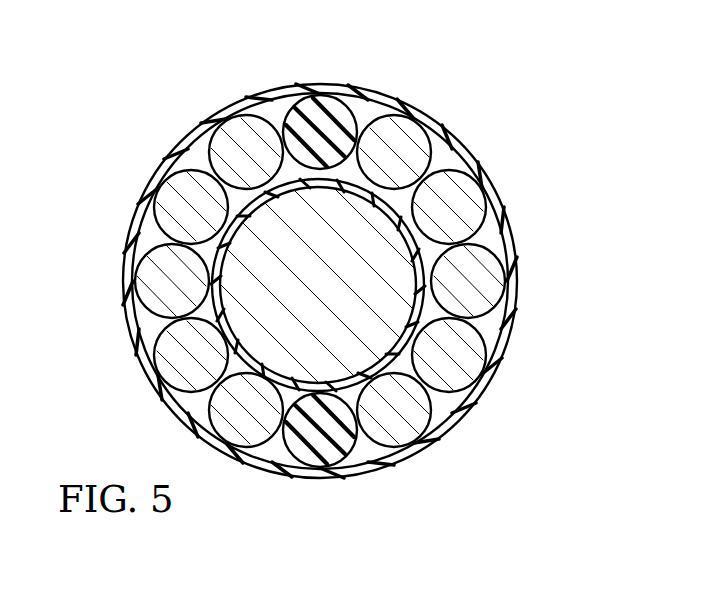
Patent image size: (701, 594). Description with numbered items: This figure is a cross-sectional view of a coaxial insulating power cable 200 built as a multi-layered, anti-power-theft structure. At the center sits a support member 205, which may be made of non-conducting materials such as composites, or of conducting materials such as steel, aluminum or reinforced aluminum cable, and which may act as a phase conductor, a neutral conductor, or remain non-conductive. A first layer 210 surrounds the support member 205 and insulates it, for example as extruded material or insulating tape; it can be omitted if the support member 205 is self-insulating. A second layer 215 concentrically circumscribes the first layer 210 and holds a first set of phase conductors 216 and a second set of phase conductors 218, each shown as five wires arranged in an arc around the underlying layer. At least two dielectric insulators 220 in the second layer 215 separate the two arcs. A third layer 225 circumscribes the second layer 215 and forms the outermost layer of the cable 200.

The coaxial insulating power cable 200 is at (158, 90).
The support member 205 is at (339, 295).
The first layer 210 is at (367, 180).
The second layer 215 is at (263, 450).
The first set of phase conductors 216 is at (243, 127).
The second set of phase conductors 218 is at (477, 193).
The dielectric insulators 220 is at (283, 125).
The third layer 225 is at (338, 90).